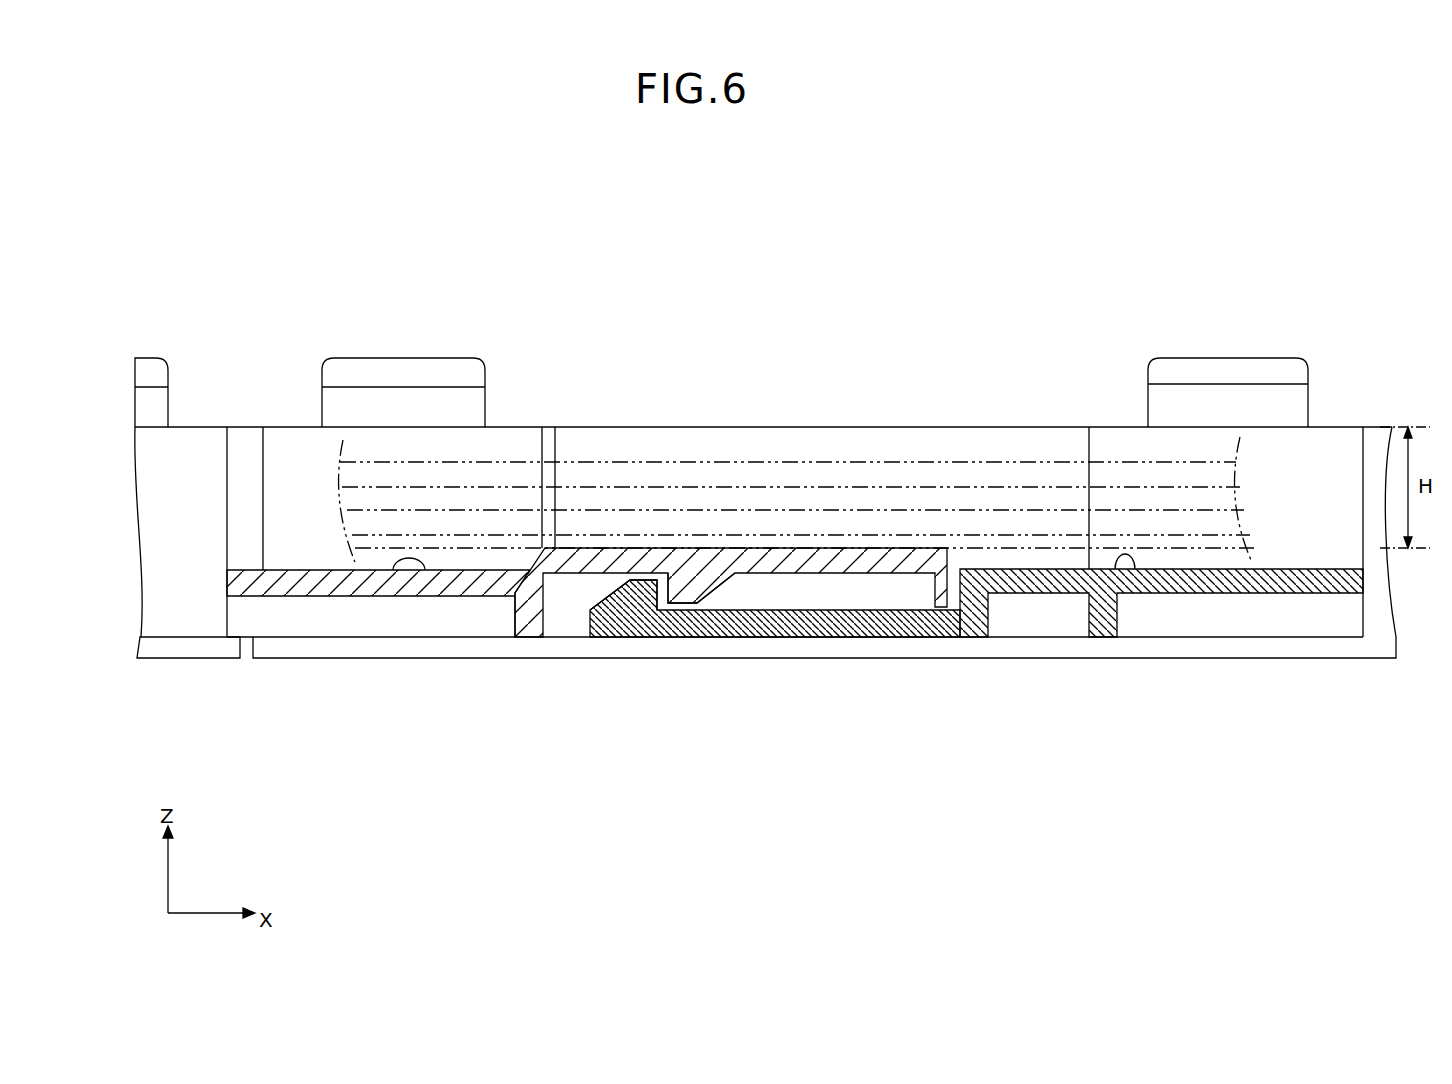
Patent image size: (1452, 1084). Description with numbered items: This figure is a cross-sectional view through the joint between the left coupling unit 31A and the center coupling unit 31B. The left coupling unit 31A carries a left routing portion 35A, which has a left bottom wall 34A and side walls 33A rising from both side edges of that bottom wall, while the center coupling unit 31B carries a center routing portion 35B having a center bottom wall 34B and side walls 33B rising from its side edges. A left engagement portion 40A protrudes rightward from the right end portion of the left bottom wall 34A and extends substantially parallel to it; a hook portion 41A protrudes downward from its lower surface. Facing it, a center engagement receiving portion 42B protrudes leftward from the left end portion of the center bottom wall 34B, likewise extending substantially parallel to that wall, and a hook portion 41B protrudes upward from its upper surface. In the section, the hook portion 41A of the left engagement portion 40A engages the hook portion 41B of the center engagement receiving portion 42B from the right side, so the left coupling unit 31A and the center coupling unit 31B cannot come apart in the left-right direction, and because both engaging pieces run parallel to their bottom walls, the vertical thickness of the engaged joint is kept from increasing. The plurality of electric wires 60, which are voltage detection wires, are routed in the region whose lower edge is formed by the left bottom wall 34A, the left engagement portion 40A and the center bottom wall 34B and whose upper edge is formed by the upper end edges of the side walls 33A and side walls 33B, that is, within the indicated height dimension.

The left coupling unit 31A is at (170, 652).
The center coupling unit 31B is at (1260, 640).
The side walls 33A is at (193, 448).
The side walls 33B is at (1335, 448).
The left bottom wall 34A is at (302, 580).
The center bottom wall 34B is at (1192, 577).
The left routing portion 35A is at (424, 576).
The center routing portion 35B is at (1133, 571).
The left engagement portion 40A is at (587, 560).
The hook portion 41A is at (700, 588).
The hook portion 41B is at (637, 610).
The center engagement receiving portion 42B is at (697, 628).
The electric wires 60 is at (425, 548).